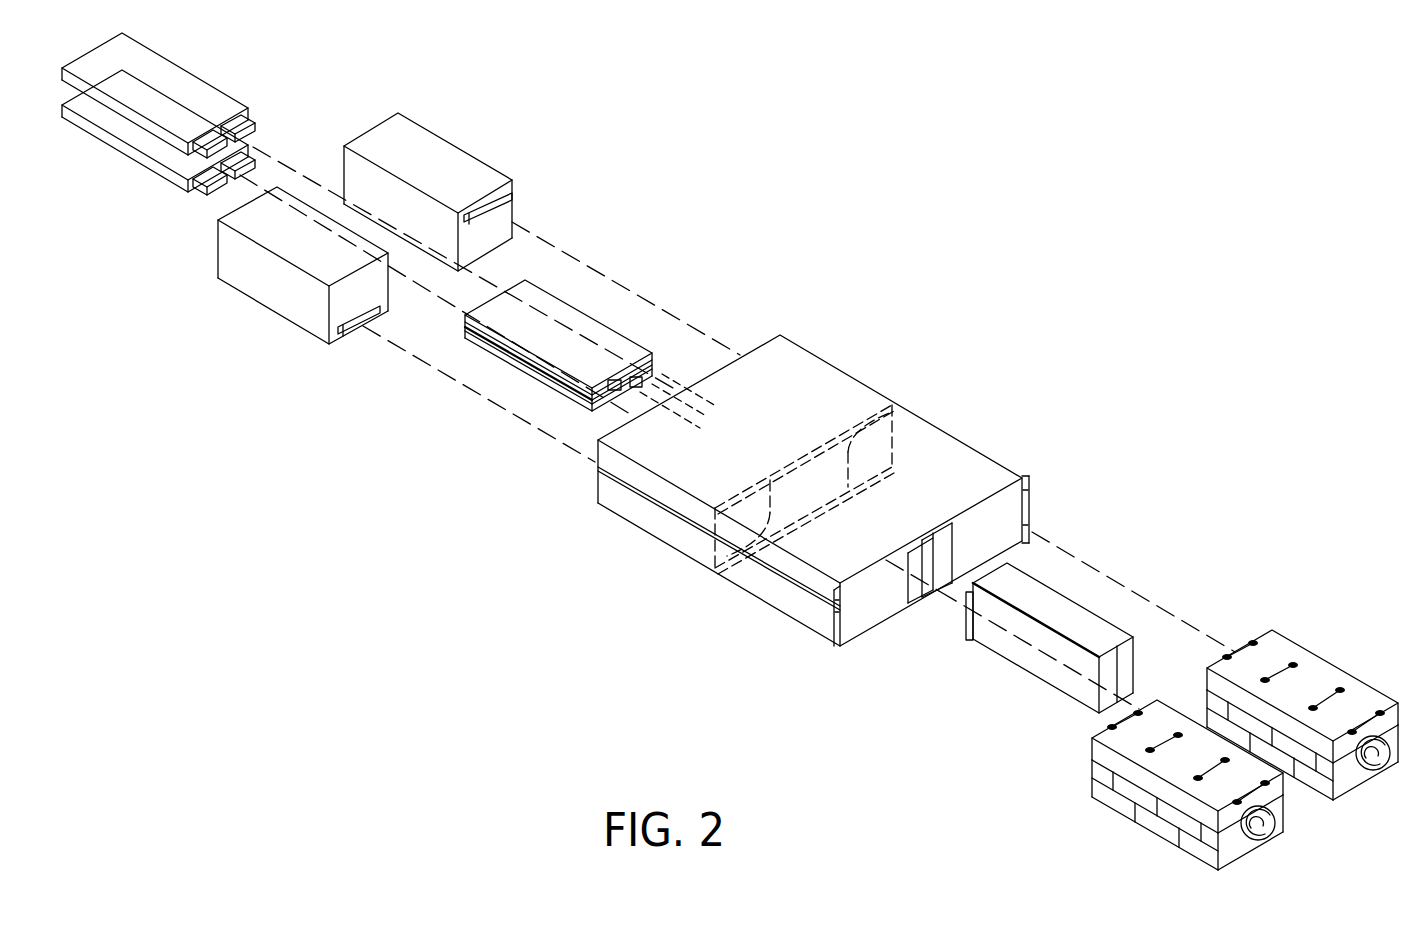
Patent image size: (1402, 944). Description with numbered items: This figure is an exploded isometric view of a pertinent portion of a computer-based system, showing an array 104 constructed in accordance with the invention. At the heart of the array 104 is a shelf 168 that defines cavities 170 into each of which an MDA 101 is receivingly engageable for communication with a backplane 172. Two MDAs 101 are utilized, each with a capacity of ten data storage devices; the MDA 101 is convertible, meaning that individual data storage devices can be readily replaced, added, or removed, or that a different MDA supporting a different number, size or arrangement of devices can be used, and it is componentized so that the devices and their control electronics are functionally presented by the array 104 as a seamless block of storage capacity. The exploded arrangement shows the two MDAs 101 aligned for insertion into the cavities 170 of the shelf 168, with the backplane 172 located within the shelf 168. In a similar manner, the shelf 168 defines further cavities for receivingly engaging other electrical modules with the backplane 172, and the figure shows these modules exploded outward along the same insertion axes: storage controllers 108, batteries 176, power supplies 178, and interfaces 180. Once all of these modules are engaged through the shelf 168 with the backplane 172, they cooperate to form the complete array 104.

The MDA 101 is at (1194, 723).
The array 104 is at (912, 258).
The storage controller 108 is at (1072, 598).
The shelf 168 is at (839, 502).
The cavity 170 is at (1012, 510).
The backplane 172 is at (815, 420).
The battery 176 is at (585, 320).
The power supply 178 is at (438, 152).
The interface 180 is at (200, 100).